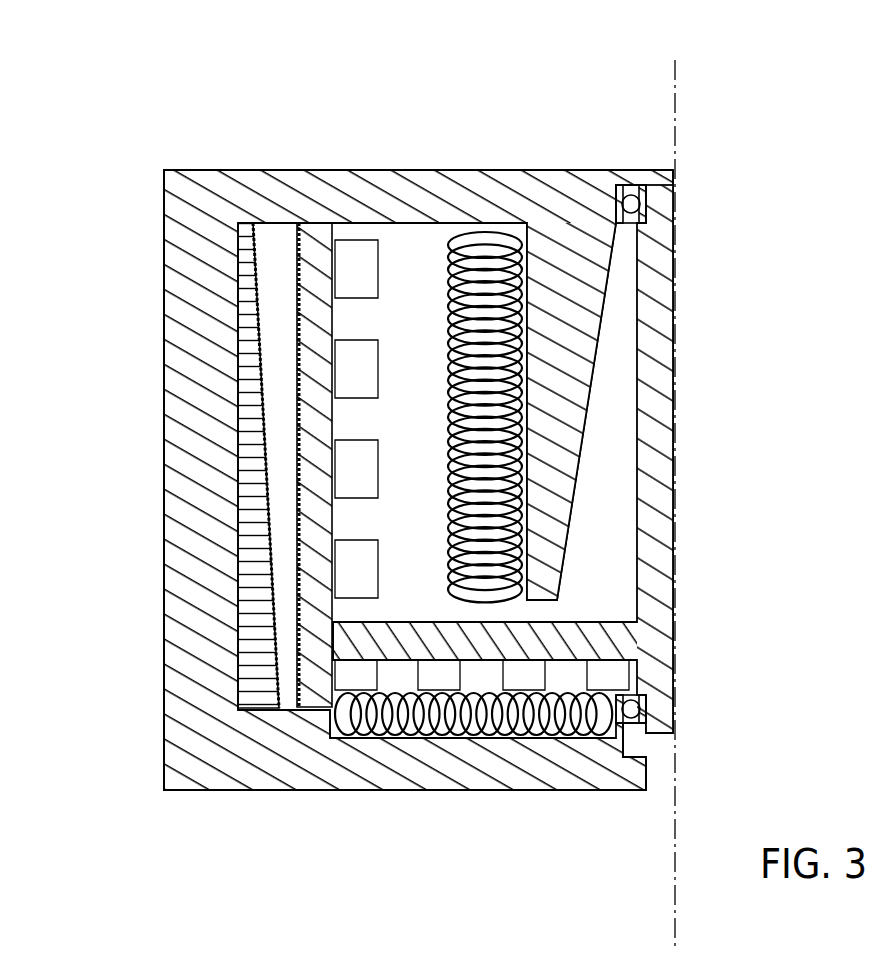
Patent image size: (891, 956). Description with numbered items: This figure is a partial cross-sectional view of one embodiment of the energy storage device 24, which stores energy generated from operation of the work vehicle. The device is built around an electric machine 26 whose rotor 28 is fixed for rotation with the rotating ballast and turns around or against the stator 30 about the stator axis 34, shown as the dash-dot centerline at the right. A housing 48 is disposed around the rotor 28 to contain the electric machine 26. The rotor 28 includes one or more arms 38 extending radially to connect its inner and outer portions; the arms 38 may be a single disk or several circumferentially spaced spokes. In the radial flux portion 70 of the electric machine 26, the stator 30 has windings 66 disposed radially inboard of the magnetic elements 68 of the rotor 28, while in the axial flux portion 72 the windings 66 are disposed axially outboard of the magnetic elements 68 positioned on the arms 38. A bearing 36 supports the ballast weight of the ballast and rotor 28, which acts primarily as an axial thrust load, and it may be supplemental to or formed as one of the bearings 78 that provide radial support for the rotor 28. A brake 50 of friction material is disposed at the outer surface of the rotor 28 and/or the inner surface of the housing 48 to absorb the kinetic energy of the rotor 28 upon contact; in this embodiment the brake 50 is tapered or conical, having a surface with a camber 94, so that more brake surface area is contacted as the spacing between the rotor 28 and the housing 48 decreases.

The energy storage device 24 is at (218, 82).
The electric machine 26 is at (268, 640).
The rotor 28 is at (293, 473).
The stator 30 is at (540, 298).
The stator axis 34 is at (674, 124).
The bearing 36 is at (662, 742).
The arm 38 is at (527, 640).
The housing 48 is at (195, 662).
The brake 50 is at (262, 400).
The windings 66 is at (447, 343).
The magnetic elements 68 is at (367, 360).
The radial flux portion 70 is at (323, 342).
The axial flux portion 72 is at (330, 720).
The bearings 78 is at (633, 186).
The camber 94 is at (262, 415).